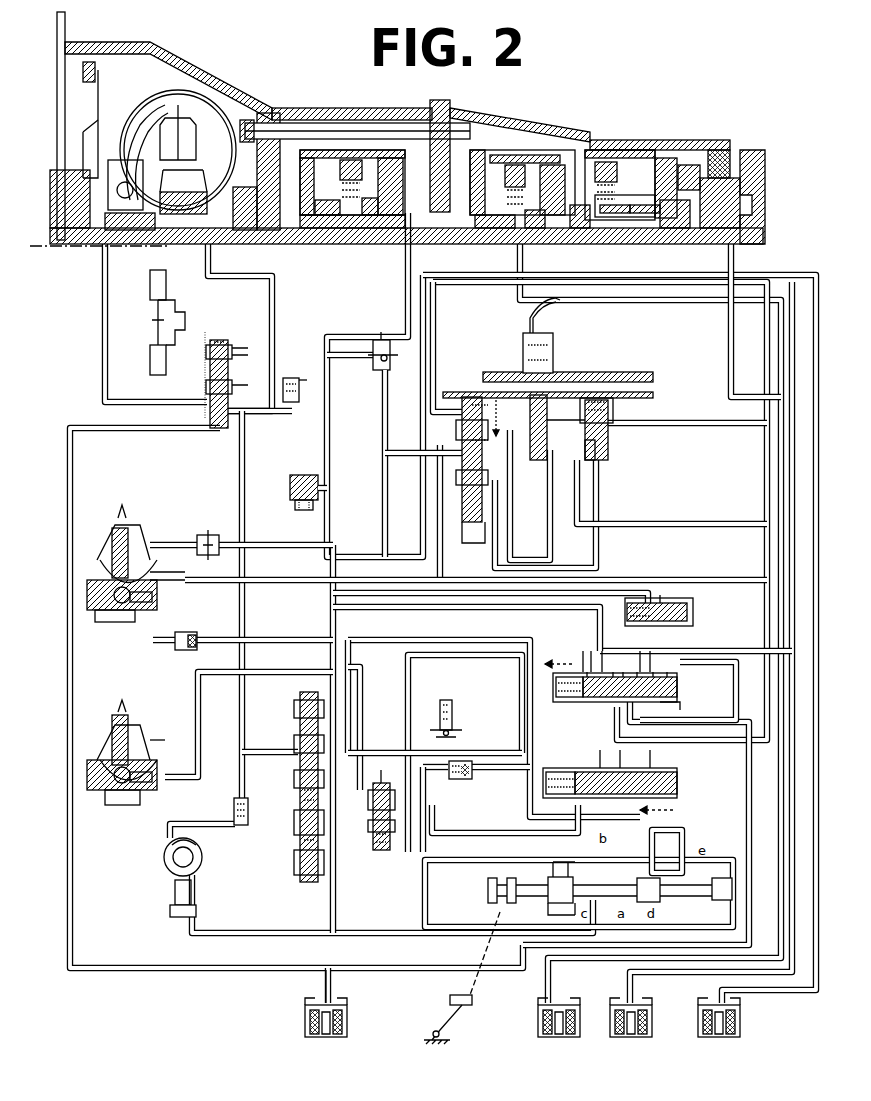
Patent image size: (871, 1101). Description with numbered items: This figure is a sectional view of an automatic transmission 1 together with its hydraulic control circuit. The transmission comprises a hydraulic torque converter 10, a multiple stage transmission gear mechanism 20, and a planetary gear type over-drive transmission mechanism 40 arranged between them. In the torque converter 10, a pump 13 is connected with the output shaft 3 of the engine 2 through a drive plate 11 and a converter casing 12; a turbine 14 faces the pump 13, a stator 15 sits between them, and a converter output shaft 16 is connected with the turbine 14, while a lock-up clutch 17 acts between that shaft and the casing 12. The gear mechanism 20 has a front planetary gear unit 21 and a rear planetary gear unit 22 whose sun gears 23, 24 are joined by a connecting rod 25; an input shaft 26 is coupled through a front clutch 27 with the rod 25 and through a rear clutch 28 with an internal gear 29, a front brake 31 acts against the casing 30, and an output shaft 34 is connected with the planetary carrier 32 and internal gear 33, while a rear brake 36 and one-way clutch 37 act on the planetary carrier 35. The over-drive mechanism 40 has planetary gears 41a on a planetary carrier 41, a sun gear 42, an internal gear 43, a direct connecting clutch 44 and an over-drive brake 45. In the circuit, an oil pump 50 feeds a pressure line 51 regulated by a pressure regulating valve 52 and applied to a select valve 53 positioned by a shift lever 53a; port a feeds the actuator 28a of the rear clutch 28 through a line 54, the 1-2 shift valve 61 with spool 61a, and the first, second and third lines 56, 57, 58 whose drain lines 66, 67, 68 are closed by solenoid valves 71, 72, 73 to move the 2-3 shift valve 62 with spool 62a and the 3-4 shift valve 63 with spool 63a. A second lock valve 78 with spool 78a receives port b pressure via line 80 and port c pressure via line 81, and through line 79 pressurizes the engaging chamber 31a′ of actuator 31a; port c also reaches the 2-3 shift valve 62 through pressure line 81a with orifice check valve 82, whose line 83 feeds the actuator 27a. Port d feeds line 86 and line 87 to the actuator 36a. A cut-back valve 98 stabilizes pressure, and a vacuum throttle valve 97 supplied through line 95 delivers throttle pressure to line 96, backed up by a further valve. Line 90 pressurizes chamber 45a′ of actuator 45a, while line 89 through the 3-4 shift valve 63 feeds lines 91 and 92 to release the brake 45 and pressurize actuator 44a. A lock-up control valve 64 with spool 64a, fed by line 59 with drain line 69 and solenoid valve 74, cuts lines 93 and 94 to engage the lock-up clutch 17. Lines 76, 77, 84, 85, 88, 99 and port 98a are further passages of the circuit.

The automatic transmission 1 is at (752, 142).
The engine 2 is at (66, 22).
The output shaft 3 is at (72, 244).
The hydraulic torque converter 10 is at (210, 88).
The drive plate 11 is at (100, 86).
The converter casing 12 is at (172, 105).
The pump 13 is at (222, 125).
The turbine 14 is at (150, 128).
The stator 15 is at (200, 185).
The converter output shaft 16 is at (118, 236).
The lock-up clutch 17 is at (92, 132).
The multiple stage transmission gear mechanism 20 is at (630, 142).
The front planetary gear unit 21 is at (610, 162).
The rear planetary gear unit 22 is at (720, 150).
The sun gear 23 is at (606, 232).
The sun gear 24 is at (652, 232).
The connecting rod 25 is at (628, 232).
The input shaft 26 is at (498, 240).
The front clutch 27 is at (490, 150).
The actuator 27a is at (412, 255).
The rear clutch 28 is at (555, 165).
The hydraulic actuator 28a is at (538, 240).
The internal gear 29 is at (592, 150).
The casing 30 is at (525, 165).
The front brake 31 is at (508, 155).
The actuator 31a is at (103, 755).
The brake engaging pressure chamber 31a′ is at (145, 795).
The planetary carrier 32 is at (580, 232).
The internal gear 33 is at (692, 165).
The output shaft 34 is at (678, 232).
The planetary carrier 35 is at (668, 158).
The rear brake 36 is at (738, 145).
The actuator 36a is at (762, 176).
The one-way clutch 37 is at (700, 240).
The planetary gear type over-drive transmission mechanism 40 is at (302, 148).
The planetary carrier 41 is at (352, 232).
The planetary gears 41a is at (290, 240).
The sun gear 42 is at (330, 232).
The internal gear 43 is at (330, 150).
The direct connecting clutch 44 is at (390, 158).
The actuator 44a is at (370, 232).
The over-drive brake 45 is at (356, 160).
The actuator 45a is at (105, 560).
The engaging pressure chamber 45a′ is at (150, 604).
The oil pump 50 is at (172, 860).
The pressure line 51 is at (250, 930).
The pressure regulating valve 52 is at (290, 840).
The select valve 53 is at (545, 878).
The shift lever 53a is at (474, 1000).
The line 54 is at (655, 301).
The first line 56 is at (656, 960).
The second line 57 is at (782, 975).
The third line 58 is at (798, 985).
The line 59 is at (240, 966).
The 1-2 shift valve 61 is at (684, 680).
The spool 61a is at (675, 702).
The 2-3 shift valve 62 is at (690, 768).
The spool 62a is at (683, 792).
The 3-4 shift valve 63 is at (539, 443).
The spool 63a is at (462, 425).
The lock-up control valve 64 is at (216, 400).
The spool 64a is at (228, 370).
The first drain line 66 is at (560, 998).
The second drain line 67 is at (640, 998).
The third drain line 68 is at (730, 998).
The drain line 69 is at (332, 990).
The first solenoid valve 71 is at (536, 1030).
The second solenoid valve 72 is at (608, 1030).
The third solenoid valve 73 is at (696, 1030).
The solenoid valve 74 is at (303, 1030).
The passage 76 is at (710, 648).
The passage 77 is at (480, 660).
The second lock valve 78 is at (372, 852).
The spool 78a is at (392, 778).
The line 79 is at (362, 698).
The line 80 is at (453, 833).
The line 81 is at (427, 876).
The pressure line 81a is at (460, 752).
The orifice check valve 82 is at (472, 778).
The line 83 is at (527, 796).
The passage 84 is at (386, 646).
The passage 85 is at (425, 611).
The line 86 is at (751, 862).
The line 87 is at (635, 742).
The passage 88 is at (688, 840).
The line 89 is at (398, 555).
The line 90 is at (288, 586).
The line 91 is at (383, 396).
The line 92 is at (383, 505).
The line 93 is at (244, 703).
The line 94 is at (106, 326).
The line 95 is at (558, 552).
The line 96 is at (512, 497).
The vacuum throttle valve 97 is at (558, 379).
The cut-back valve 98 is at (693, 604).
The cut-back valve port 98a is at (665, 600).
The passage 99 is at (502, 598).